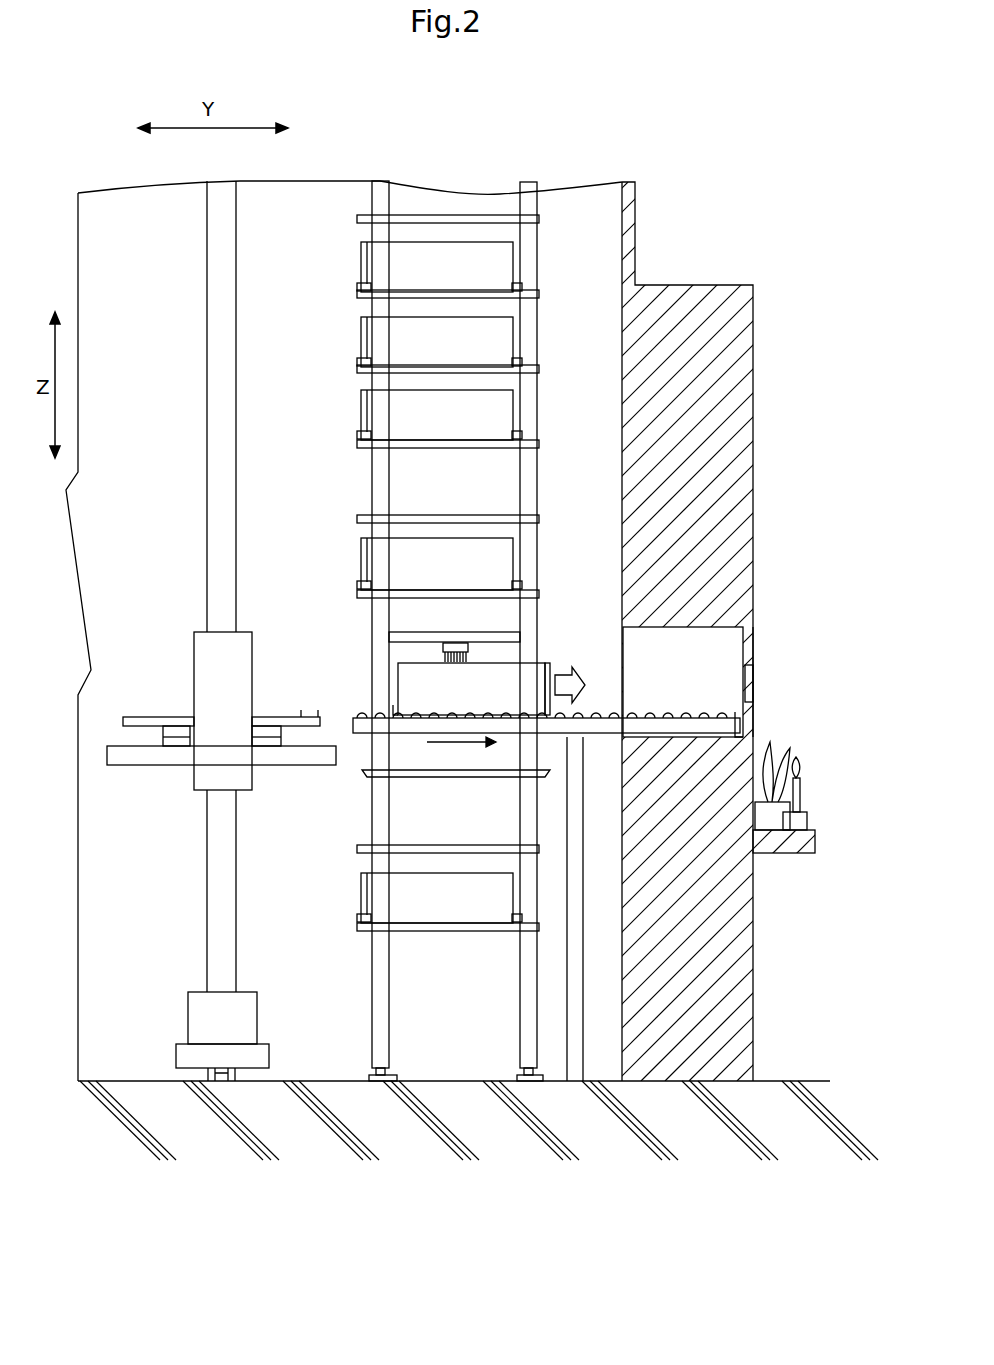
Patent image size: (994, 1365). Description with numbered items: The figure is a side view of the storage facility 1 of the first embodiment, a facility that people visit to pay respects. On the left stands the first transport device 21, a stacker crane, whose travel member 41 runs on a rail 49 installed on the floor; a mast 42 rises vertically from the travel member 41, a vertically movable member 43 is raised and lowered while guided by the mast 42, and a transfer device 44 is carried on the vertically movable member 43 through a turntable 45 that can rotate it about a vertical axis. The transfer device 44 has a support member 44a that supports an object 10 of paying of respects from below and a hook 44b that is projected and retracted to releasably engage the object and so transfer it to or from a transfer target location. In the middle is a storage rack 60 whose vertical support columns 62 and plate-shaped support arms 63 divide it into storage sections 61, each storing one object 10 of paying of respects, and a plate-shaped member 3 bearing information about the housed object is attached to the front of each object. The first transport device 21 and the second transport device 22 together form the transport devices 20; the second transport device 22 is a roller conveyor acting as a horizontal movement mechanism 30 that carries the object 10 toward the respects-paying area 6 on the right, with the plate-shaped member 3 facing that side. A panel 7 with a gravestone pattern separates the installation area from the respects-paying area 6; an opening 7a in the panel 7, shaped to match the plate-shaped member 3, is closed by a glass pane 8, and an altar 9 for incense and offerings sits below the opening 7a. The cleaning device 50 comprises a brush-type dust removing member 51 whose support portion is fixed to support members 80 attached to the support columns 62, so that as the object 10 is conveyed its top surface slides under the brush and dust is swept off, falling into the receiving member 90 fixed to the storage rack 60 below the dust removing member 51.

The storage facility 1 is at (686, 151).
The plate-shaped member 3 is at (365, 340).
The respects-paying area 6 is at (497, 631).
The panel 7 is at (711, 631).
The opening 7a is at (753, 666).
The glass pane 8 is at (754, 688).
The altar 9 is at (785, 848).
The object of paying of respects 10 is at (447, 582).
The transport device 20 is at (326, 678).
The first transport device 21 is at (219, 678).
The second transport device 22 is at (365, 748).
The horizontal movement mechanism 30 is at (643, 727).
The travel member 41 is at (262, 1045).
The mast 42 is at (207, 362).
The vertically movable member 43 is at (143, 760).
The transfer device 44 is at (221, 717).
The support member 44a is at (165, 717).
The hook 44b is at (319, 712).
The turntable 45 is at (188, 745).
The rail 49 is at (222, 1078).
The cleaning device 50 is at (532, 616).
The dust removing member 51 is at (458, 648).
The storage rack 60 is at (459, 593).
The storage section 61 is at (472, 573).
The support column 62 is at (378, 458).
The support arm 63 is at (420, 510).
The support member 80 is at (415, 637).
The receiving member 90 is at (440, 775).